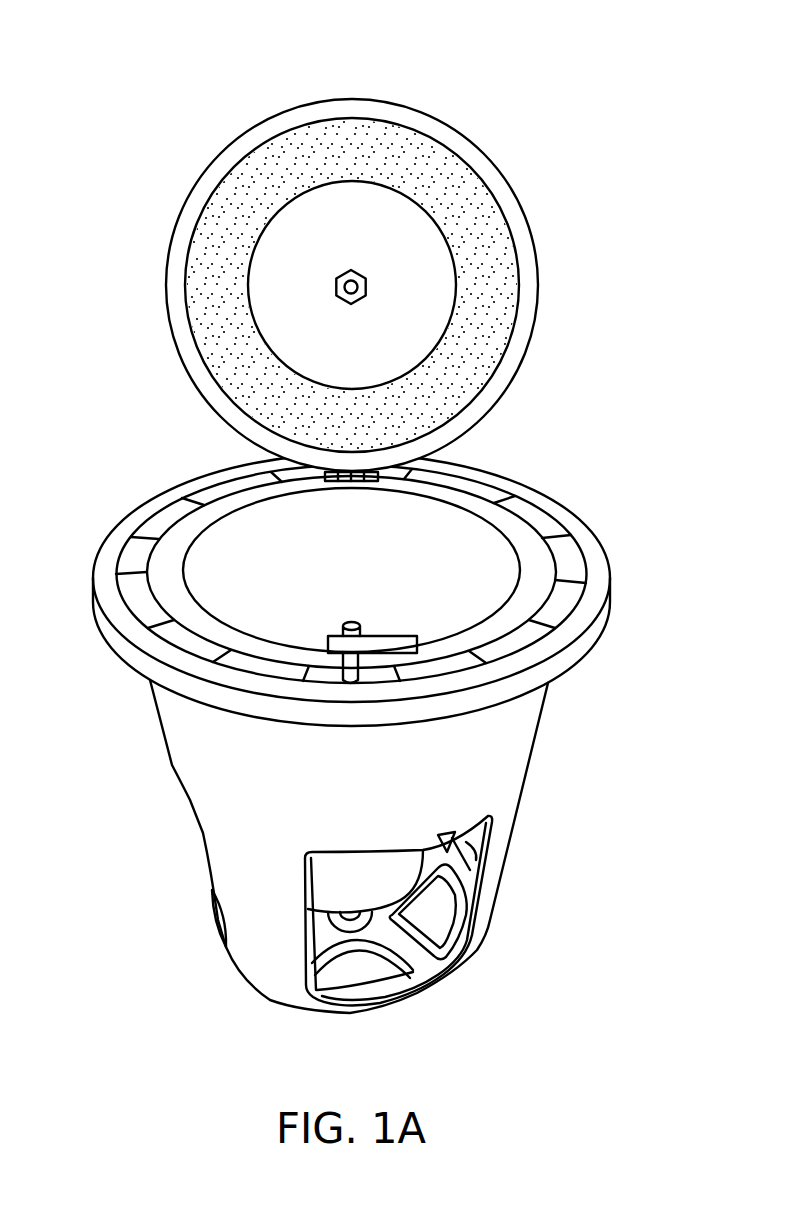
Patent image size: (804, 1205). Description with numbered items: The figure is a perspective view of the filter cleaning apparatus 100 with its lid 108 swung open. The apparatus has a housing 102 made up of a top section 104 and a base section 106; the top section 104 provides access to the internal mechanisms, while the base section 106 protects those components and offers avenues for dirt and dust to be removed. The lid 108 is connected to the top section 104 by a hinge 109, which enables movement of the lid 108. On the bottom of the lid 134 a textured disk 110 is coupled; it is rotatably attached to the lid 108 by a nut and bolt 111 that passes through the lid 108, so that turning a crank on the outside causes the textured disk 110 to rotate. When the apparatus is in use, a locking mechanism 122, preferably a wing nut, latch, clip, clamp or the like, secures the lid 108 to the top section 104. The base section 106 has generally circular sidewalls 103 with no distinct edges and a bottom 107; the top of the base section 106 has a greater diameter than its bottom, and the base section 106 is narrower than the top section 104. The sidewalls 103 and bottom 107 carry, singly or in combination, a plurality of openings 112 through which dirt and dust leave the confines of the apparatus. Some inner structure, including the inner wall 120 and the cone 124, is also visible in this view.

The filter cleaning apparatus 100 is at (177, 61).
The housing 102 is at (622, 447).
The sidewalls 103 is at (540, 727).
The top section 104 is at (539, 512).
The base section 106 is at (487, 776).
The bottom 107 is at (438, 963).
The lid 108 is at (455, 130).
The hinge 109 is at (326, 477).
The textured disk 110 is at (285, 243).
The nut and bolt 111 is at (337, 293).
The openings 112 is at (203, 857).
The inner wall 120 is at (232, 556).
The locking mechanism 122 is at (380, 641).
The cone 124 is at (367, 888).
The bottom of the lid 134 is at (492, 330).